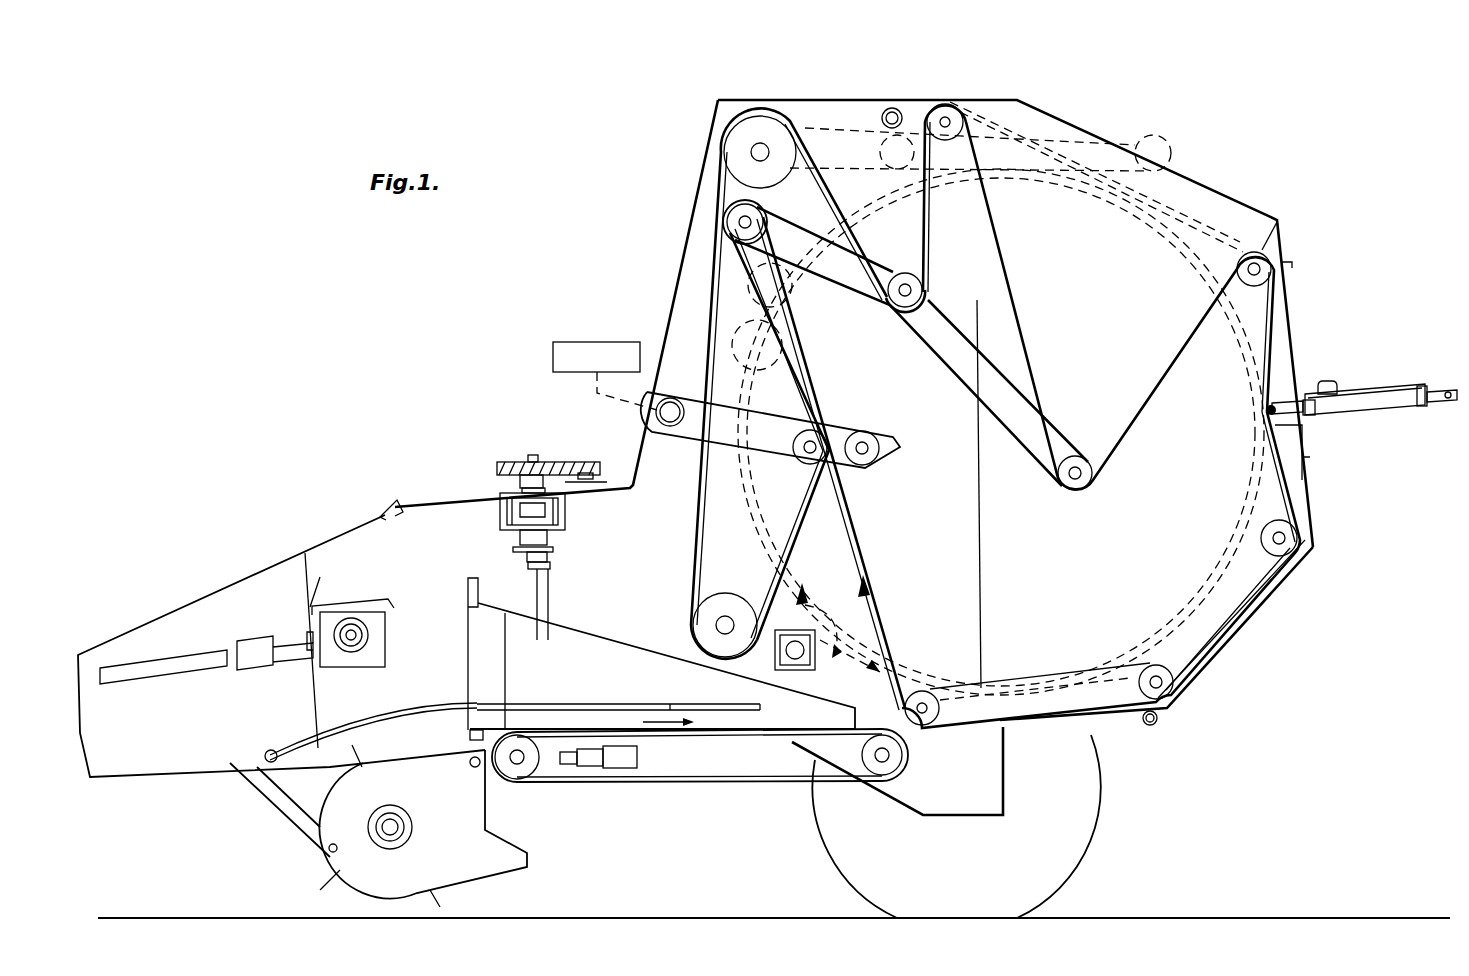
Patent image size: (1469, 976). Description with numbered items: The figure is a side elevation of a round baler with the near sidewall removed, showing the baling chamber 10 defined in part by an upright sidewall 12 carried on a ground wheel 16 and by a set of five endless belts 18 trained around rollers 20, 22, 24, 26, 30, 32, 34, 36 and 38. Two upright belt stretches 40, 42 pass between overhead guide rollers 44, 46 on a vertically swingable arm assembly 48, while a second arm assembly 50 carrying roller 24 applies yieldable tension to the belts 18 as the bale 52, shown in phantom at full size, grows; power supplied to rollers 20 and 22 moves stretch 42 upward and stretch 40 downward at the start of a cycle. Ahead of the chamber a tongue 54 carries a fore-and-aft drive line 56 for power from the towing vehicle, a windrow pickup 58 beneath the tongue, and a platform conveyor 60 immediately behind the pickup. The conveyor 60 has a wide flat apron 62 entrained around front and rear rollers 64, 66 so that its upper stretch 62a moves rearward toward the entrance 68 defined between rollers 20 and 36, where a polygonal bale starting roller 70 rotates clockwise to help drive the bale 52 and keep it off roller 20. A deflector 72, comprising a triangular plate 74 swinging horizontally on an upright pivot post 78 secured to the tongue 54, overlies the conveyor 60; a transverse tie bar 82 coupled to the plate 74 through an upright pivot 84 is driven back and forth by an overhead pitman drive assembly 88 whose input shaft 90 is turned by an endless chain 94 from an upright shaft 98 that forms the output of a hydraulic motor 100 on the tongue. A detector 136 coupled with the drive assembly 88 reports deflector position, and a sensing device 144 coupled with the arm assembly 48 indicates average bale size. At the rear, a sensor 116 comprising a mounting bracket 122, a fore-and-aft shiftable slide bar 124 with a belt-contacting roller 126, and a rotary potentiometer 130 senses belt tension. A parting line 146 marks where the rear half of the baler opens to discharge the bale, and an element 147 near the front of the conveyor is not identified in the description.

The baling chamber 10 is at (872, 683).
The sidewall 12 is at (866, 100).
The ground wheels 16 is at (1090, 812).
The belts 18 is at (878, 570).
The roller 20 is at (722, 595).
The roller 22 is at (740, 150).
The roller 24 is at (905, 308).
The roller 26 is at (948, 118).
The roller 30 is at (1265, 261).
The roller 32 is at (1290, 556).
The roller 34 is at (1162, 700).
The belt roller 36 is at (926, 690).
The roller 38 is at (735, 226).
The belt stretch 40 is at (800, 524).
The belt stretch 42 is at (868, 526).
The guide roller 44 is at (792, 456).
The guide roller 46 is at (872, 440).
The arm assembly 48 is at (695, 355).
The second arm assembly 50 is at (970, 346).
The bale 52 is at (1240, 632).
The tongue 54 is at (172, 612).
The drive line 56 is at (176, 672).
The windrow pickup 58 is at (350, 855).
The platform conveyor 60 is at (678, 782).
The apron 62 is at (610, 782).
The upper stretch 62a is at (556, 714).
The roller 64 is at (517, 780).
The rear transverse roller 66 is at (896, 760).
The entrance 68 is at (822, 690).
The bale starting roller 70 is at (796, 630).
The deflector 72 is at (636, 632).
The plate 74 is at (480, 636).
The pivot post 78 is at (468, 584).
The tie bar 82 is at (532, 566).
The upright pivot 84 is at (549, 602).
The pitman drive assembly 88 is at (472, 481).
The input shaft 90 is at (533, 455).
The endless chain 94 is at (558, 460).
The clutch 98 is at (586, 472).
The hydraulic motor 100 is at (607, 482).
The sensor 116 is at (1376, 390).
The mounting bracket 122 is at (1412, 390).
The slide bar 124 is at (1440, 408).
The roller 126 is at (1082, 482).
The rotary potentiometer 130 is at (1326, 379).
The detector 136 is at (560, 502).
The sensing device 144 is at (552, 348).
The parting line 146 is at (983, 520).
The crop guard 147 is at (396, 706).